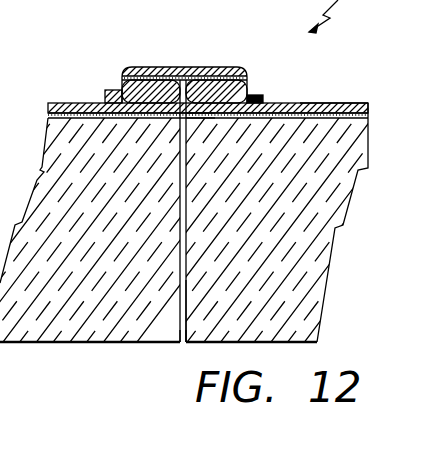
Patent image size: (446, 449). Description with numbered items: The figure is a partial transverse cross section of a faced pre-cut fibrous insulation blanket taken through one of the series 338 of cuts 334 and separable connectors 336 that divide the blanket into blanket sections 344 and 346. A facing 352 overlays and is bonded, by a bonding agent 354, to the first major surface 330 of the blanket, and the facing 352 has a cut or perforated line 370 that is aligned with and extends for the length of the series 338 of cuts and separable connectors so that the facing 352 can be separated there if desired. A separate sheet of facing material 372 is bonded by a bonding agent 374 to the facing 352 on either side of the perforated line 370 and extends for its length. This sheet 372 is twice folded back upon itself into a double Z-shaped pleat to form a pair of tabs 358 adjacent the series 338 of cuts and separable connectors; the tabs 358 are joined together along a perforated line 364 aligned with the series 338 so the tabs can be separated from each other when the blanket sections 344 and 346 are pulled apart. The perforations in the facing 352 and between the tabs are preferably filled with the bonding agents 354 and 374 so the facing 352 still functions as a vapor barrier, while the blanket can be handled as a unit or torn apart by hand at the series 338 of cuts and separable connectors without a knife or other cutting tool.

The first major surface 330 is at (61, 103).
The cuts 334 is at (196, 312).
The separable connectors 336 is at (179, 237).
The series of cuts and separable connectors 338 is at (174, 344).
The blanket section 344 is at (301, 222).
The blanket section 346 is at (86, 274).
The facing 352 is at (330, 104).
The bonding agent 354 is at (341, 120).
The tabs 358 is at (140, 67).
The perforated line 364 is at (183, 67).
The perforated line 370 is at (200, 120).
The sheet of facing material 372 is at (247, 68).
The bonding agent 374 is at (259, 100).